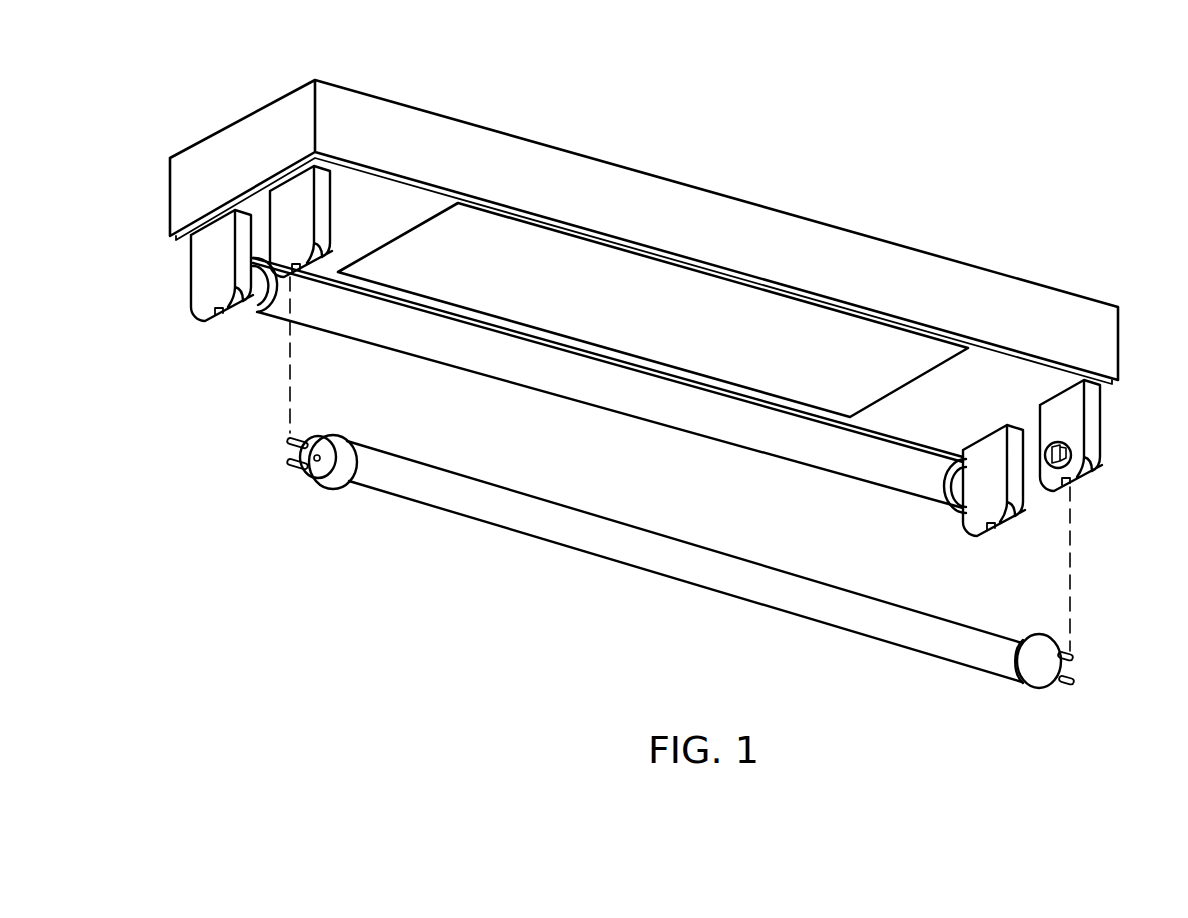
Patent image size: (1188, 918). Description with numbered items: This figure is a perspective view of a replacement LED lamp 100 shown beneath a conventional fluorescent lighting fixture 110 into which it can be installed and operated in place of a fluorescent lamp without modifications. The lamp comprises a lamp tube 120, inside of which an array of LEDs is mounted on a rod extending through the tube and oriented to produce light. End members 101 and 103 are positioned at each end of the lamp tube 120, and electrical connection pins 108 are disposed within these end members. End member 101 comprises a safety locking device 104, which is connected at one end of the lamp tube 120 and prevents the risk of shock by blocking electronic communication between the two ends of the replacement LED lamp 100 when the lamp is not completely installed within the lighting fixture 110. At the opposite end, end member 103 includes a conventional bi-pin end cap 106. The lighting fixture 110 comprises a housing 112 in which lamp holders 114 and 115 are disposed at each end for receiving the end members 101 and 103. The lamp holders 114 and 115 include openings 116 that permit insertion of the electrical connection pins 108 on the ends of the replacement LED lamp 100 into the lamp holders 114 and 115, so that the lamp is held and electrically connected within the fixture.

The replacement LED lamp 100 is at (697, 541).
The end member 101 is at (278, 450).
The end member 103 is at (1090, 670).
The safety locking device 104 is at (322, 425).
The bi-pin end cap 106 is at (1050, 655).
The electrical connection pins 108 is at (292, 470).
The fluorescent lighting fixture 110 is at (644, 365).
The housing 112 is at (629, 163).
The lamp holder 114 is at (217, 232).
The lamp holder 115 is at (987, 447).
The openings 116 is at (302, 267).
The lamp tube 120 is at (613, 556).